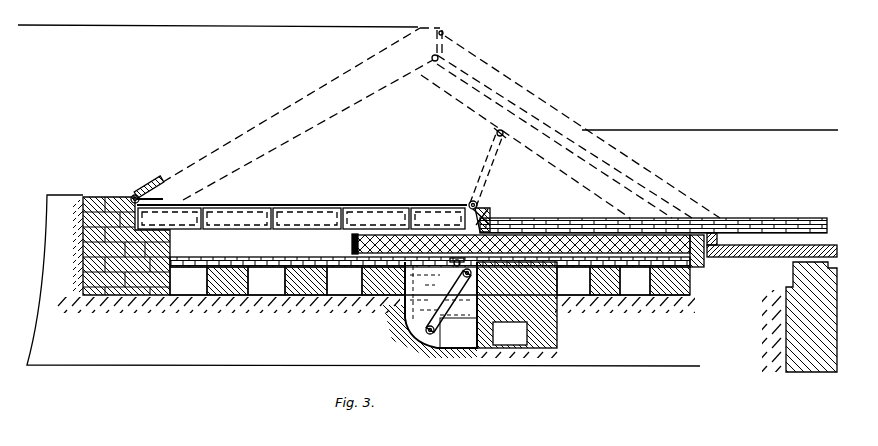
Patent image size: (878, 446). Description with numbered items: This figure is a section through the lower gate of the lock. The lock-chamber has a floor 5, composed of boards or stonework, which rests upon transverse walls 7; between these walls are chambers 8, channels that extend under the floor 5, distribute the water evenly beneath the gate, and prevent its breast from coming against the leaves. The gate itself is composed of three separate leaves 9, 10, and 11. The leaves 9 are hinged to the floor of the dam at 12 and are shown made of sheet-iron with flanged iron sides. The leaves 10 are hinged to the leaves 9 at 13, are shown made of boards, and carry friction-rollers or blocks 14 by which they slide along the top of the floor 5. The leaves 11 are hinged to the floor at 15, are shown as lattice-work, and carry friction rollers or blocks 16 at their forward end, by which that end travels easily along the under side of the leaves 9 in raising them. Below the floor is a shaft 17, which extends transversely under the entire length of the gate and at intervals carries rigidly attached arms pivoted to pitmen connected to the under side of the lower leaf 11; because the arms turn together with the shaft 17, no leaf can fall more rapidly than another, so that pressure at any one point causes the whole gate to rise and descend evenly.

The floor 5 is at (228, 258).
The transverse walls 7 is at (398, 307).
The chambers 8 is at (430, 281).
The leaves 9 is at (302, 209).
The leaves 10 is at (653, 226).
The leaves 11 is at (523, 244).
The hinge 12 is at (140, 189).
The hinge 13 is at (487, 180).
The friction-rollers or blocks 14 is at (448, 290).
The hinge 15 is at (698, 268).
The friction rollers or blocks 16 is at (352, 238).
The shaft 17 is at (467, 270).